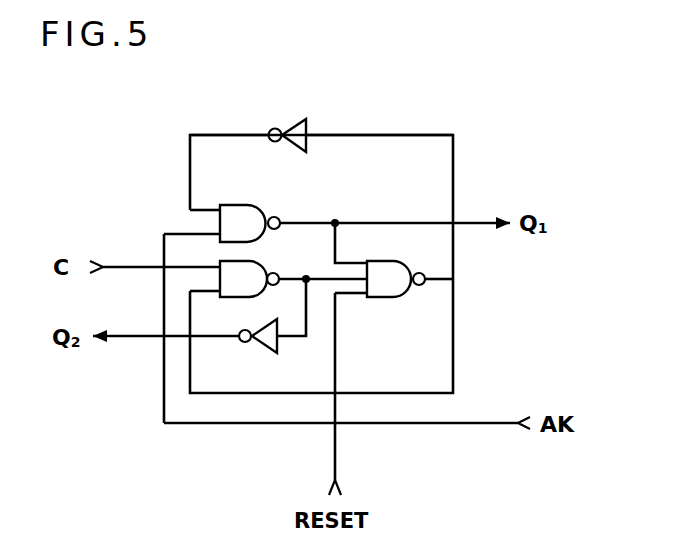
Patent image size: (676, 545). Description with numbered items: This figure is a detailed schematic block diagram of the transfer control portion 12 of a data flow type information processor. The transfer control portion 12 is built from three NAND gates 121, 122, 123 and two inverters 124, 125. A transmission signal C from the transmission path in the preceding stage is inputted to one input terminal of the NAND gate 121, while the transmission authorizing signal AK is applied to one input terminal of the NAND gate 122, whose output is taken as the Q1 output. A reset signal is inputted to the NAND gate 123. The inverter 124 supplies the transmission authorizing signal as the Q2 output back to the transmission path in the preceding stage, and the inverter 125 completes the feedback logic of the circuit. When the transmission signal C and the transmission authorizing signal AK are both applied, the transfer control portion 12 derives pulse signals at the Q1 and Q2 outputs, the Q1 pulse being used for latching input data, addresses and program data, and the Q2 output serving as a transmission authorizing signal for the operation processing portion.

The transfer control portion 12 is at (440, 103).
The NAND gate 121 is at (252, 261).
The NAND gate 122 is at (252, 205).
The NAND gate 123 is at (384, 261).
The inverter 124 is at (258, 345).
The inverter 125 is at (308, 123).